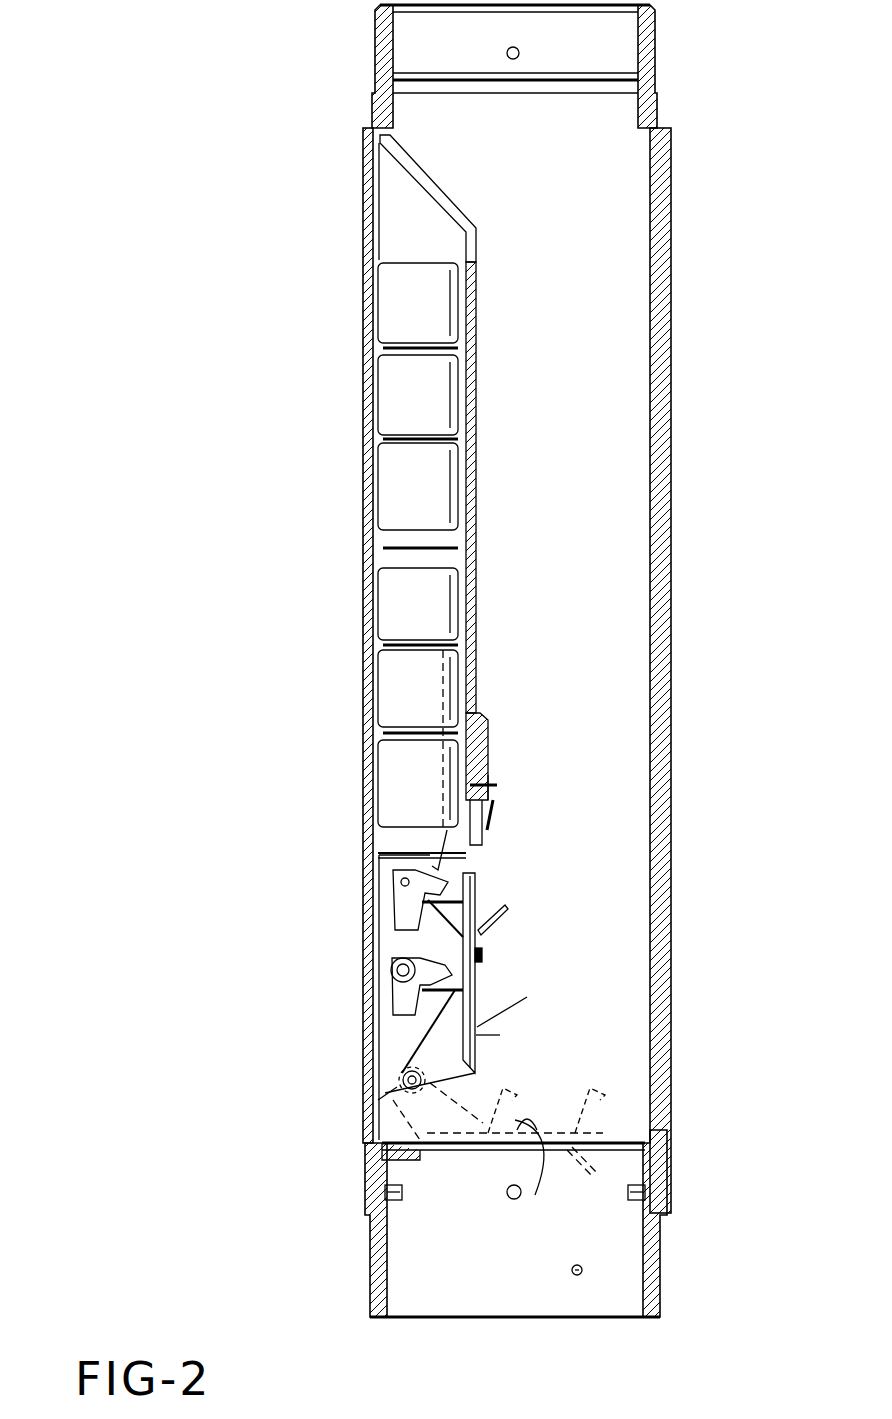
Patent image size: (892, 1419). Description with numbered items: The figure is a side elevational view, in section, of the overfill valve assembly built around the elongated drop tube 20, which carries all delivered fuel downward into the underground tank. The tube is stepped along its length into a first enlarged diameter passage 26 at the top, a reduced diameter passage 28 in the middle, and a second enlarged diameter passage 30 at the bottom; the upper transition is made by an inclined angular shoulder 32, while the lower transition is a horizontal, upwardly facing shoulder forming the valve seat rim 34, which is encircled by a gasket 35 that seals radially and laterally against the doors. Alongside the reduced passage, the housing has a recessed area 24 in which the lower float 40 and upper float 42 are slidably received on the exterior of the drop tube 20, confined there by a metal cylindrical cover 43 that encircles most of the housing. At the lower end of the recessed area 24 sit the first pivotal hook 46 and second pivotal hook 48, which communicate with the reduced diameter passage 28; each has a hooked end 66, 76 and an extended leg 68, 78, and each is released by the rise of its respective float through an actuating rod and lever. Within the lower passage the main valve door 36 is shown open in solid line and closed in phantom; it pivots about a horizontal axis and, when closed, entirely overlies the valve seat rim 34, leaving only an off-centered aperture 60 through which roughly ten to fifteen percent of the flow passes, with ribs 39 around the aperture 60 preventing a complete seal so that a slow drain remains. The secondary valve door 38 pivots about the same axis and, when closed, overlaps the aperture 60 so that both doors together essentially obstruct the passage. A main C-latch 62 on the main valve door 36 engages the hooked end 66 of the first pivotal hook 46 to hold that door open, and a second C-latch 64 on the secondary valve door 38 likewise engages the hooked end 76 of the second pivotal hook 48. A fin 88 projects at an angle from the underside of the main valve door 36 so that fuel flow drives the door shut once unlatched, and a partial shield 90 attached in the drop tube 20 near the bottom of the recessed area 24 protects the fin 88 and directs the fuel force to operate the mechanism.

The drop tube 20 is at (510, 670).
The recessed area 24 is at (392, 548).
The first enlarged diameter passage 26 is at (617, 122).
The reduced diameter passage 28 is at (635, 572).
The second enlarged diameter passage 30 is at (630, 1262).
The angular shoulder 32 is at (400, 198).
The valve seat rim 34 is at (387, 1165).
The gasket 35 is at (385, 1143).
The main valve door 36 is at (478, 880).
The secondary valve door 38 is at (478, 974).
The ribs 39 is at (480, 995).
The lower float 40 is at (392, 690).
The upper float 42 is at (392, 372).
The cylindrical cover 43 is at (363, 262).
The first pivotal hook 46 is at (397, 920).
The second pivotal hook 48 is at (395, 985).
The aperture 60 is at (476, 1035).
The main C-latch 62 is at (395, 938).
The second C-latch 64 is at (400, 1032).
The hooked end 66 is at (440, 870).
The extended leg 68 is at (398, 922).
The hooked end 76 is at (392, 966).
The extended leg 78 is at (395, 1010).
The fin 88 is at (505, 906).
The partial shield 90 is at (455, 838).